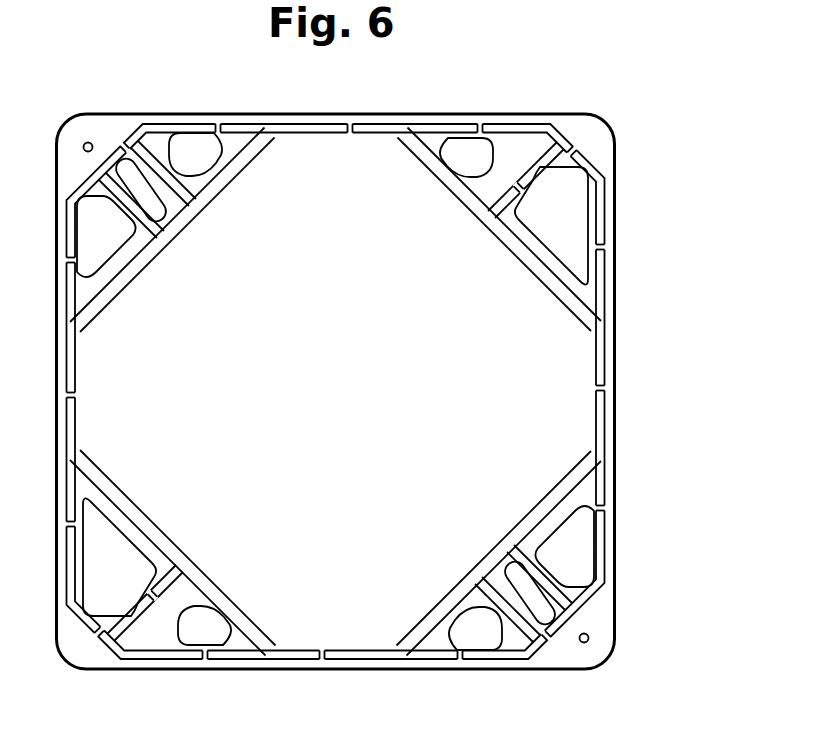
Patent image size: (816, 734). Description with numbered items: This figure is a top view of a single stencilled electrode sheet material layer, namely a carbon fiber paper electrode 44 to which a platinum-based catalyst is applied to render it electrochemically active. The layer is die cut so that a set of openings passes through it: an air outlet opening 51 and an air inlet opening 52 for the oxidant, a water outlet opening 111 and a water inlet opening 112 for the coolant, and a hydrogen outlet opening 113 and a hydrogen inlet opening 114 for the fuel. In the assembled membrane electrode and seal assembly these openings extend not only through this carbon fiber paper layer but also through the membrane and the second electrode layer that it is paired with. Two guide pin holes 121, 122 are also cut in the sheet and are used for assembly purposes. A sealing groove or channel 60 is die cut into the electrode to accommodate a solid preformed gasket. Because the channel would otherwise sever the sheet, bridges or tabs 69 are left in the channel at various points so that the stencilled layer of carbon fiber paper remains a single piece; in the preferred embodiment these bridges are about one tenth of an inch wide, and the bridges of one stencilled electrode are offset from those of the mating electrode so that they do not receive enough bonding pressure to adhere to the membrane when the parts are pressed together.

The carbon fiber paper electrode 44 is at (673, 97).
The air outlet opening 51 is at (97, 573).
The air inlet opening 52 is at (205, 634).
The sealing groove 60 is at (602, 426).
The bridges 69 is at (555, 493).
The water outlet opening 111 is at (140, 172).
The water inlet opening 112 is at (200, 150).
The hydrogen outlet opening 113 is at (576, 553).
The hydrogen inlet opening 114 is at (479, 633).
The guide pin hole 121 is at (88, 142).
The guide pin hole 122 is at (590, 635).